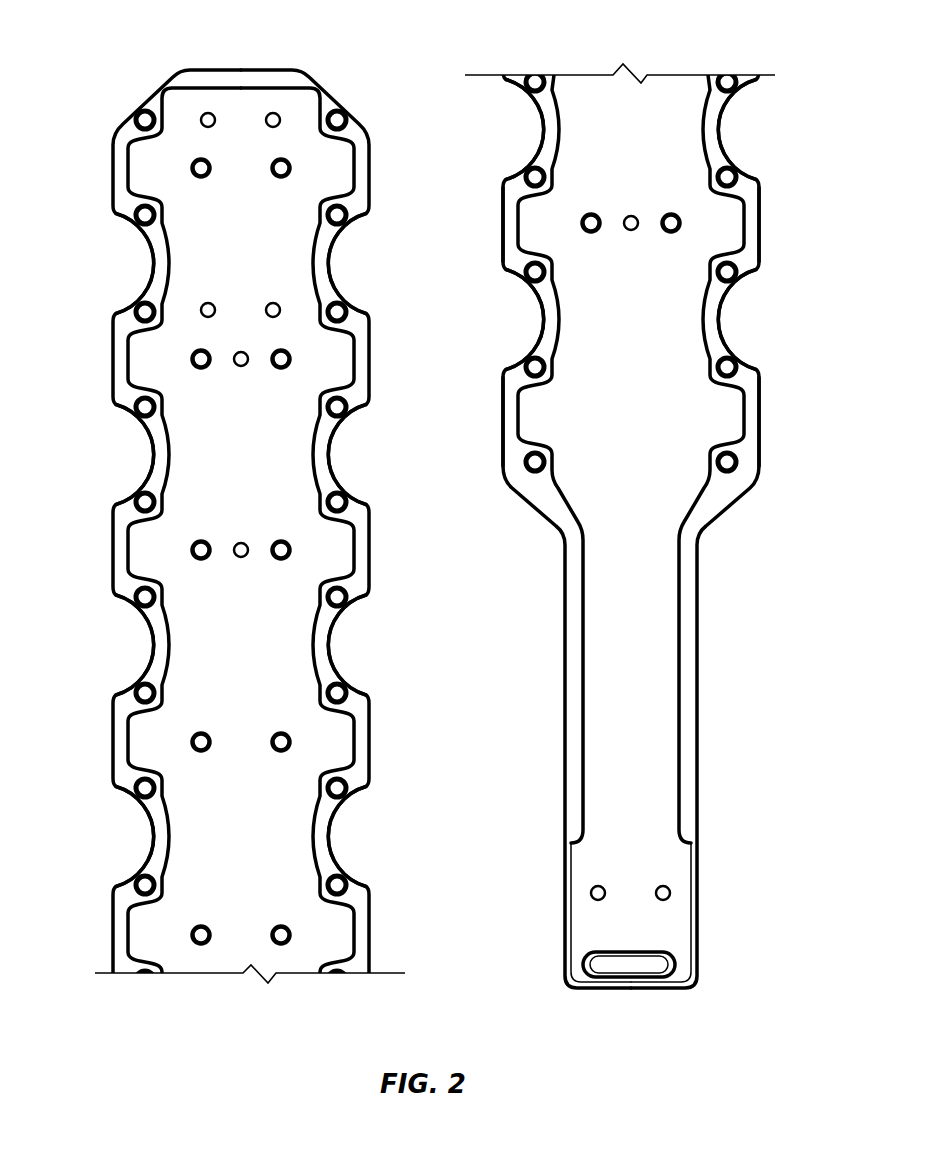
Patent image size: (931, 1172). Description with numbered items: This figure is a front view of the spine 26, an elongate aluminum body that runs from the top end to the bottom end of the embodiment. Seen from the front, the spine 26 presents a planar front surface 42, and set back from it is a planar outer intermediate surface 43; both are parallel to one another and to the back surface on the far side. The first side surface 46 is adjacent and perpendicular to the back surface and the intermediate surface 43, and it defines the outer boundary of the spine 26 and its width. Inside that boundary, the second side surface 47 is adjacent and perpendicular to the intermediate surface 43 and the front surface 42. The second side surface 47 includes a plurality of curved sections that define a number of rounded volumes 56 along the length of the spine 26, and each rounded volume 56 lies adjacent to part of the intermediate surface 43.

The spine 26 is at (124, 68).
The front surface 42 is at (252, 268).
The outer intermediate surface 43 is at (116, 127).
The first side surface 46 is at (213, 69).
The second side surface 47 is at (251, 87).
The rounded volume 56 is at (150, 264).